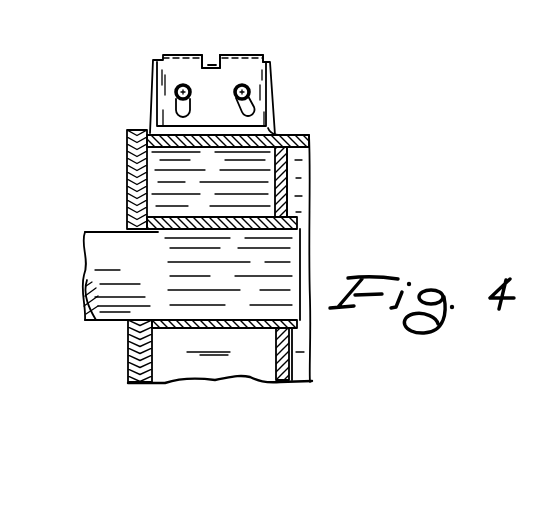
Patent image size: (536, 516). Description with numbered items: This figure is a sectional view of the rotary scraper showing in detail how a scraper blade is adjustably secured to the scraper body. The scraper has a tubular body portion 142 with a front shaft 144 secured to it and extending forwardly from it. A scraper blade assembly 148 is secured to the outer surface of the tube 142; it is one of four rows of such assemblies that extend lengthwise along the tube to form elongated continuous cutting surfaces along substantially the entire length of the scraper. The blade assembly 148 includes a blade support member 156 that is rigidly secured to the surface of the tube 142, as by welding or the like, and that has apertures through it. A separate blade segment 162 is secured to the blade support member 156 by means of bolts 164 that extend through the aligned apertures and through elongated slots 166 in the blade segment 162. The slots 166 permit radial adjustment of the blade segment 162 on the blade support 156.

The tubular body portion 142 is at (310, 175).
The front shaft 144 is at (103, 240).
The scraper blade assembly 148 is at (231, 76).
The blade support member 156 is at (210, 57).
The blade segment 162 is at (246, 63).
The bolt 164 is at (174, 93).
The elongated slot 166 is at (250, 116).